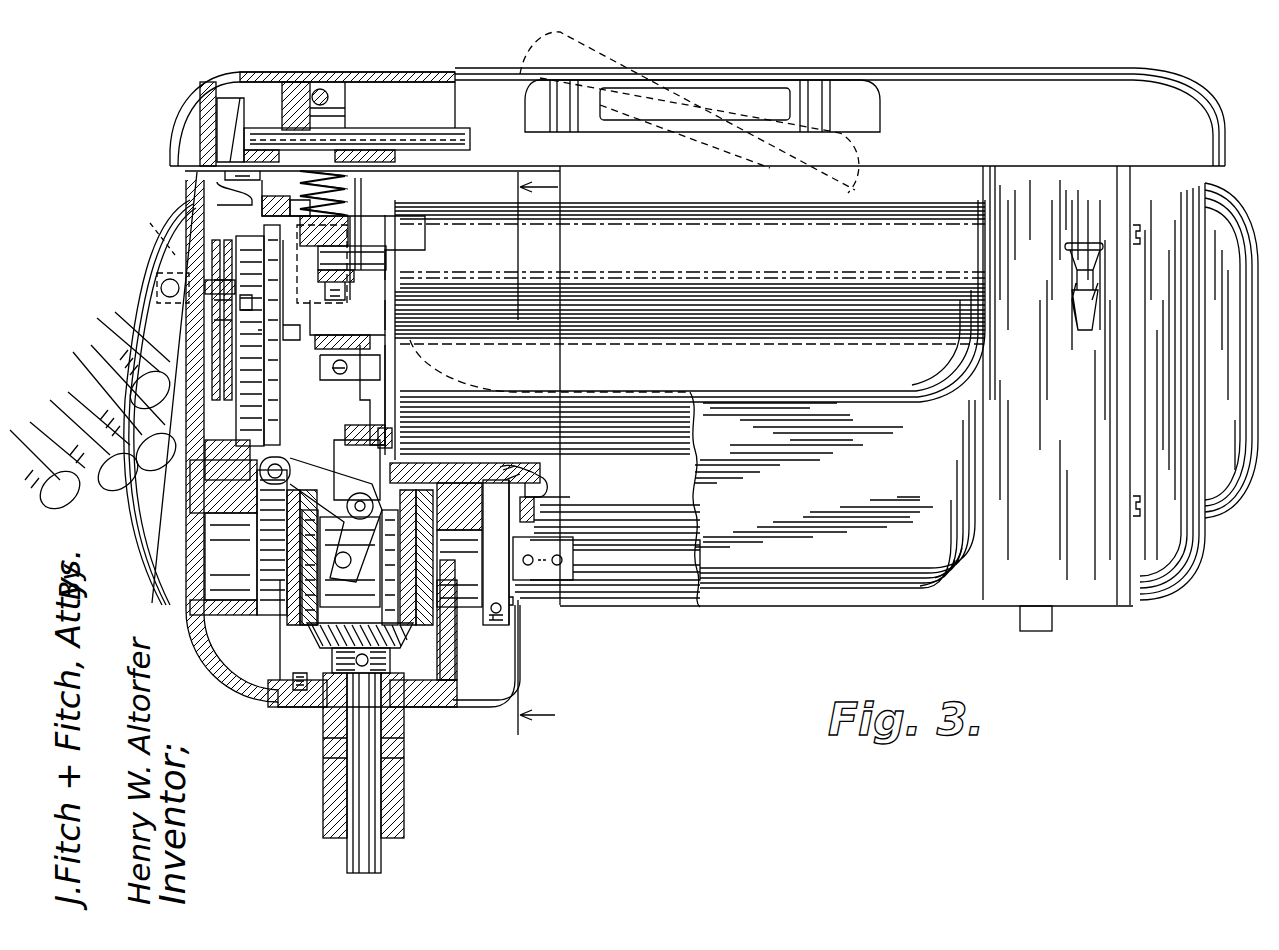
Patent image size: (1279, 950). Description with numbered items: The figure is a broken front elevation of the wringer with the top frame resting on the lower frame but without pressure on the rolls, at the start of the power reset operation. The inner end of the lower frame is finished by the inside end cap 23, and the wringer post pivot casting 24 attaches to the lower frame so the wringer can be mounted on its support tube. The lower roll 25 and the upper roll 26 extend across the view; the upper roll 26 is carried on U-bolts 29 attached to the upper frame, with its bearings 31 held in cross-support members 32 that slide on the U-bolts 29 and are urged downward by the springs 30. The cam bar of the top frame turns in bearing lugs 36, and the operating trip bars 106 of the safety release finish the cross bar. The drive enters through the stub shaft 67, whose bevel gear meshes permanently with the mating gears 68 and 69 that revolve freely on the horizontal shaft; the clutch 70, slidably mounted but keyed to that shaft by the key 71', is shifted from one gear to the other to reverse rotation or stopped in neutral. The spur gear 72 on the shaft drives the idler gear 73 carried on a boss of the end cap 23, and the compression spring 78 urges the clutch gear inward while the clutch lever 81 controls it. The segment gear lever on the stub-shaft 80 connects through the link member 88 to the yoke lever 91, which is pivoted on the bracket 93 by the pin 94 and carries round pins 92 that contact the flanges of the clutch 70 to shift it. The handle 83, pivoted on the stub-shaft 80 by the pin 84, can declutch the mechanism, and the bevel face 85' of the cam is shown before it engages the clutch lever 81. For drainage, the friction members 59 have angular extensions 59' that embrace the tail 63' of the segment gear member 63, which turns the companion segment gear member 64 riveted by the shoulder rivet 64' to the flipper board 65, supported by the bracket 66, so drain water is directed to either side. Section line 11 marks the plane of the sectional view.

The section line 11 is at (553, 453).
The inside end cap 23 is at (220, 637).
The wringer post pivot casting 24 is at (405, 782).
The lower roll 25 is at (650, 385).
The upper roll 26 is at (718, 260).
The U-bolts 29 is at (330, 128).
The springs 30 is at (365, 183).
The bearings 31 is at (356, 248).
The cross-support members 32 is at (348, 222).
The bearing lugs 36 is at (310, 100).
The friction members 59 is at (606, 567).
The angular extensions 59' is at (526, 577).
The segment gear member 63 is at (558, 558).
The tail 63' is at (537, 621).
The companion segment gear member 64 is at (610, 515).
The shoulder rivet 64' is at (617, 489).
The flipper board 65 is at (632, 538).
The bracket 66 is at (540, 486).
The stub shaft 67 is at (275, 687).
The mating gear 68 is at (290, 640).
The mating gear 69 is at (440, 640).
The clutch 70 is at (350, 567).
The key 71' is at (459, 545).
The spur gear 72 is at (265, 560).
The idler gear 73 is at (205, 520).
The compression spring 78 is at (222, 353).
The stub-shaft 80 is at (148, 238).
The clutch lever 81 is at (215, 328).
The handle 83 is at (140, 316).
The pin 84 is at (160, 292).
The bevel face 85' is at (187, 130).
The link member 88 is at (305, 330).
The yoke lever 91 is at (321, 519).
The round pins 92 is at (343, 552).
The bracket 93 is at (385, 440).
The pin 94 is at (360, 494).
The operating trip bars 106 is at (732, 100).